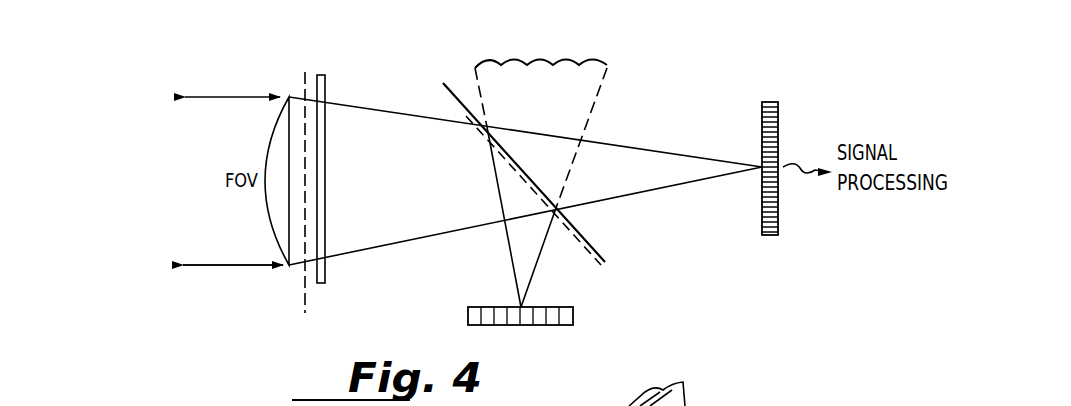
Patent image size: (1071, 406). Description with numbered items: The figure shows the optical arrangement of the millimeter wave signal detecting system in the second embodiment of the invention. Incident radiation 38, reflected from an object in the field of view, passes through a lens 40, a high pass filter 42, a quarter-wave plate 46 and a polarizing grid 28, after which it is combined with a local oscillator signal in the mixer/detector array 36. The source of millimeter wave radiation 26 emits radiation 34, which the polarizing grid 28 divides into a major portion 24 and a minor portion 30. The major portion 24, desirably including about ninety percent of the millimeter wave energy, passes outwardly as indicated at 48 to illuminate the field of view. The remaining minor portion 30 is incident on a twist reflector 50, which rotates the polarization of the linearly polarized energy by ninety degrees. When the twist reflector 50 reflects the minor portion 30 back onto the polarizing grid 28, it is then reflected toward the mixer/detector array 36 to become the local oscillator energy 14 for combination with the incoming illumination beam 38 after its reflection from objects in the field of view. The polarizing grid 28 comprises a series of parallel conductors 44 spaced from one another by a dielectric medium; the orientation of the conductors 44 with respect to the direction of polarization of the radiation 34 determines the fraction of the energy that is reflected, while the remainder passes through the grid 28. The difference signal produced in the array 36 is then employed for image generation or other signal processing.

The local oscillator energy 14 is at (650, 148).
The major portion 24 is at (228, 267).
The source of millimeter wave radiation 26 is at (577, 317).
The polarizing grid 28 is at (459, 84).
The minor portion 30 is at (565, 103).
The radiation emitted by the source 34 is at (522, 262).
The mixer/detector array 36 is at (768, 97).
The incident radiation 38 is at (264, 96).
The lens 40 is at (277, 145).
The high pass filter 42 is at (305, 73).
The conductors 44 is at (482, 124).
The quarter-wave plate 46 is at (322, 88).
The outward illumination 48 is at (185, 258).
The twist reflector 50 is at (587, 60).